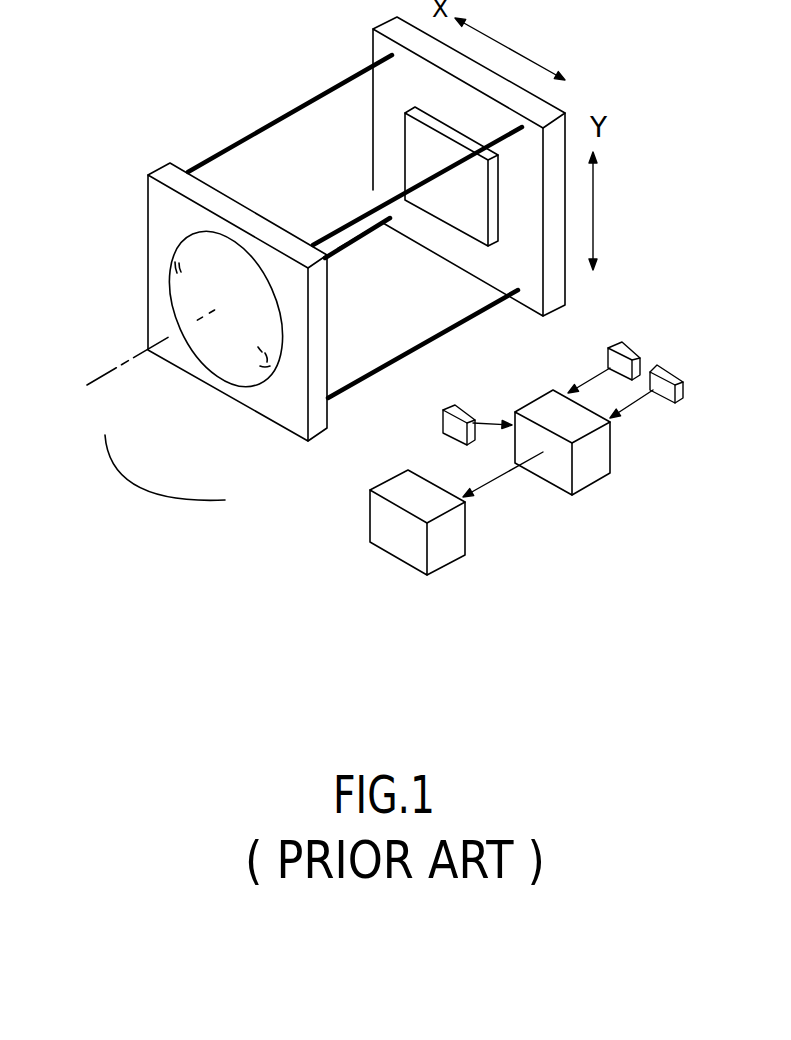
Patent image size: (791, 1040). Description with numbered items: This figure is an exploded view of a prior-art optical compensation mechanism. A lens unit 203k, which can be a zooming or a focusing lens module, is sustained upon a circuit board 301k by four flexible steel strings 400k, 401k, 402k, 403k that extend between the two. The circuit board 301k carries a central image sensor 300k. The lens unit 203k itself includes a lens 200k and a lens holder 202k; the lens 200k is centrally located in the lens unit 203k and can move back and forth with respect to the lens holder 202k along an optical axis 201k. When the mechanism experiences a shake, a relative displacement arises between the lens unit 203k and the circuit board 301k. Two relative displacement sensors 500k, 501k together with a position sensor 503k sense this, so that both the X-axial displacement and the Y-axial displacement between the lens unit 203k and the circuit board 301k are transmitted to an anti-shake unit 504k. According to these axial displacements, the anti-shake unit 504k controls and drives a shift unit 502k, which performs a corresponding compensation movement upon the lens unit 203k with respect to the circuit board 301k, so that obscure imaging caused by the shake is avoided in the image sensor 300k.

The lens 200k is at (212, 340).
The optical axis 201k is at (102, 370).
The lens holder 202k is at (270, 397).
The lens unit 203k is at (128, 478).
The image sensor 300k is at (412, 153).
The circuit board 301k is at (377, 45).
The flexible steel string 400k is at (285, 110).
The flexible steel string 401k is at (360, 217).
The flexible steel string 402k is at (397, 356).
The flexible steel string 403k is at (362, 242).
The relative displacement sensor 500k is at (625, 347).
The relative displacement sensor 501k is at (667, 372).
The shift unit 502k is at (393, 542).
The position sensor 503k is at (455, 408).
The anti-shake unit 504k is at (587, 478).